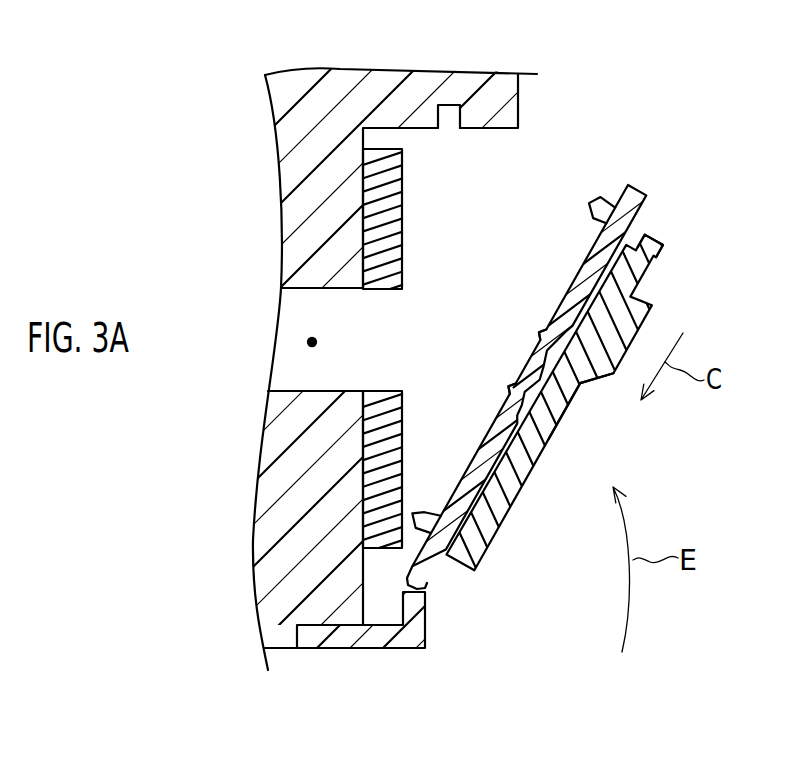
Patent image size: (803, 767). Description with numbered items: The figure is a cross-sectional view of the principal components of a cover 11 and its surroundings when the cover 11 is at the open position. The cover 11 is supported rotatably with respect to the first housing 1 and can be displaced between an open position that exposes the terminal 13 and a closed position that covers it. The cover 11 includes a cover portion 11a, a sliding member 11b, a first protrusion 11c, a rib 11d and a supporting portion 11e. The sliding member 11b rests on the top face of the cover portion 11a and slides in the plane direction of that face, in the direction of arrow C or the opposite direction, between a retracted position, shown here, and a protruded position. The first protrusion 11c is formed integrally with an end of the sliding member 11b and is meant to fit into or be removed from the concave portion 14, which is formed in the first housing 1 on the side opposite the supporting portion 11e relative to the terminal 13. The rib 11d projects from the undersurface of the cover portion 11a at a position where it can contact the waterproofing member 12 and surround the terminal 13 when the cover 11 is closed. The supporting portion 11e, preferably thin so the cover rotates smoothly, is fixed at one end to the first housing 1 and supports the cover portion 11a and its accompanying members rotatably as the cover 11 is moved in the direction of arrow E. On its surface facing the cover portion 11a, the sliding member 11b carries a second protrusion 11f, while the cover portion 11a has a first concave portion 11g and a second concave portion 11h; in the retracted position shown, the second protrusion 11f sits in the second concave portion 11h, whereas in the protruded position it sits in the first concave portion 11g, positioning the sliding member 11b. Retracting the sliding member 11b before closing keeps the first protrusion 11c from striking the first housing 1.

The first housing 1 is at (518, 100).
The cover 11 is at (722, 178).
The cover portion 11a is at (673, 166).
The sliding member 11b is at (631, 232).
The first protrusion 11c is at (662, 243).
The rib 11d is at (593, 203).
The supporting portion 11e is at (425, 587).
The second protrusion 11f is at (557, 413).
The first concave portion 11g is at (544, 333).
The second concave portion 11h is at (513, 387).
The waterproofing member 12 is at (392, 213).
The terminal 13 is at (312, 342).
The concave portion 14 is at (450, 103).